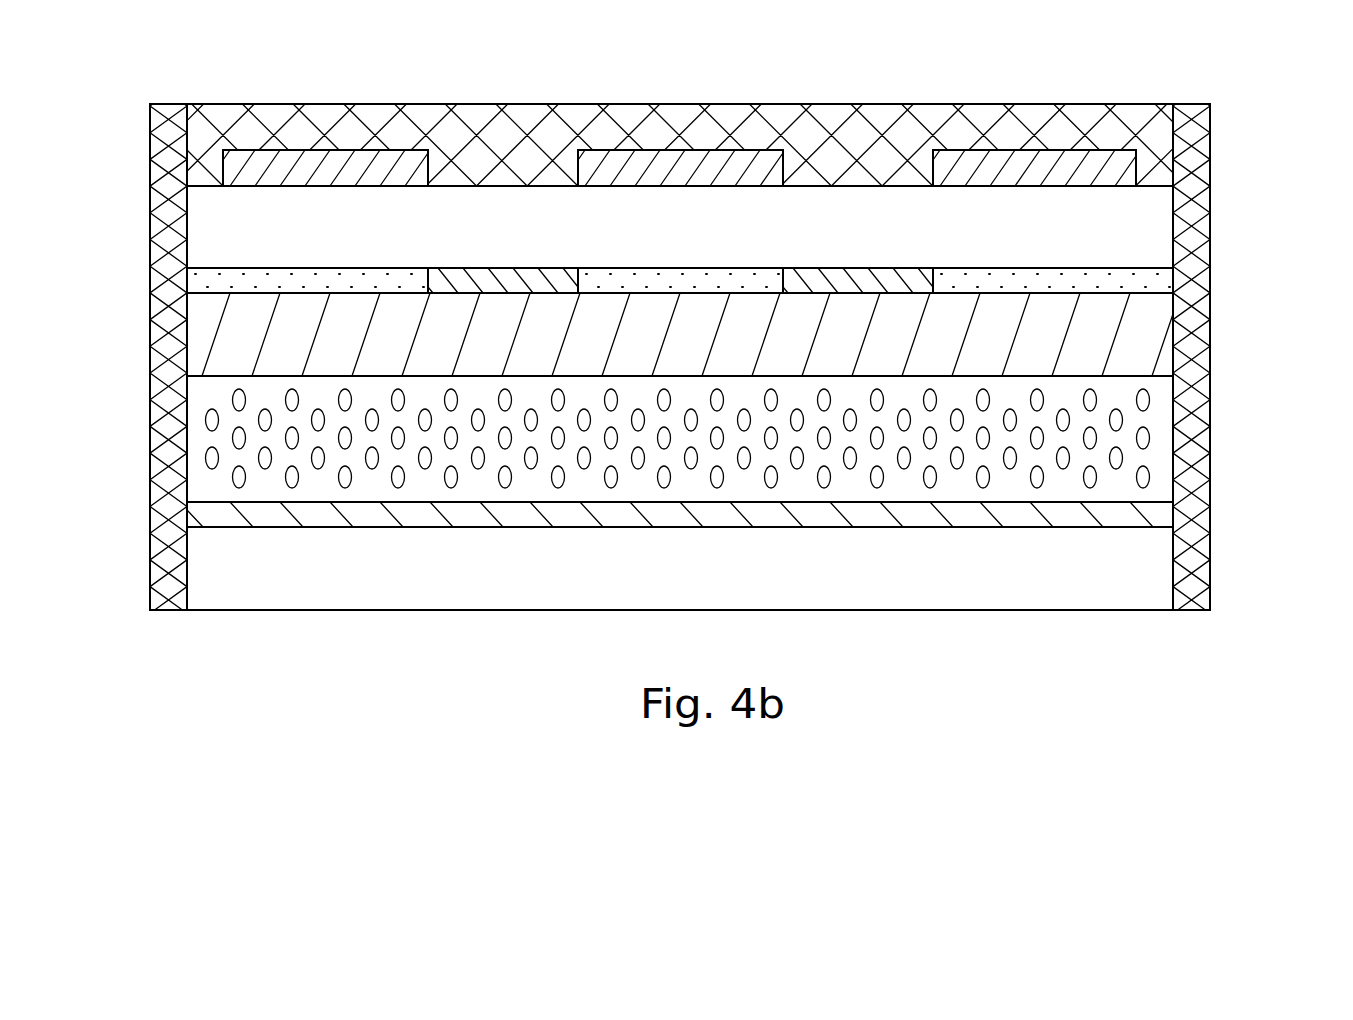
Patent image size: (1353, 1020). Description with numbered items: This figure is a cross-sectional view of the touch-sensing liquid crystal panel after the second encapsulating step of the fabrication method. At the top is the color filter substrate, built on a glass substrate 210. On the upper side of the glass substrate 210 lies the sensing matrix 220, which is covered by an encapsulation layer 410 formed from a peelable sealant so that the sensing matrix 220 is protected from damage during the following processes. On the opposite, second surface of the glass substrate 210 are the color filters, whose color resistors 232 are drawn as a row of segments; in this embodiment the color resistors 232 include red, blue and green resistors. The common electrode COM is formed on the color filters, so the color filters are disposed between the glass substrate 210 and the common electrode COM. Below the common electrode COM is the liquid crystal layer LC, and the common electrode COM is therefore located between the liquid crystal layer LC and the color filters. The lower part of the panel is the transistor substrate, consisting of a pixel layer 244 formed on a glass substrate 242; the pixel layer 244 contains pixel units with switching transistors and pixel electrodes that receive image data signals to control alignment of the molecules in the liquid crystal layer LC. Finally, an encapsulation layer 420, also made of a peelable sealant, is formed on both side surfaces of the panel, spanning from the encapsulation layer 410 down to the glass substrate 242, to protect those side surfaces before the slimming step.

The encapsulation layer 420 is at (168, 118).
The encapsulation layer 410 is at (858, 118).
The sensing matrix 220 is at (1120, 165).
The glass substrate 210 is at (1158, 228).
The color resistors 232 is at (1163, 283).
The common electrode COM is at (1158, 335).
The liquid crystal layer LC is at (1158, 433).
The pixel layer 244 is at (1158, 517).
The glass substrate 242 is at (1158, 572).